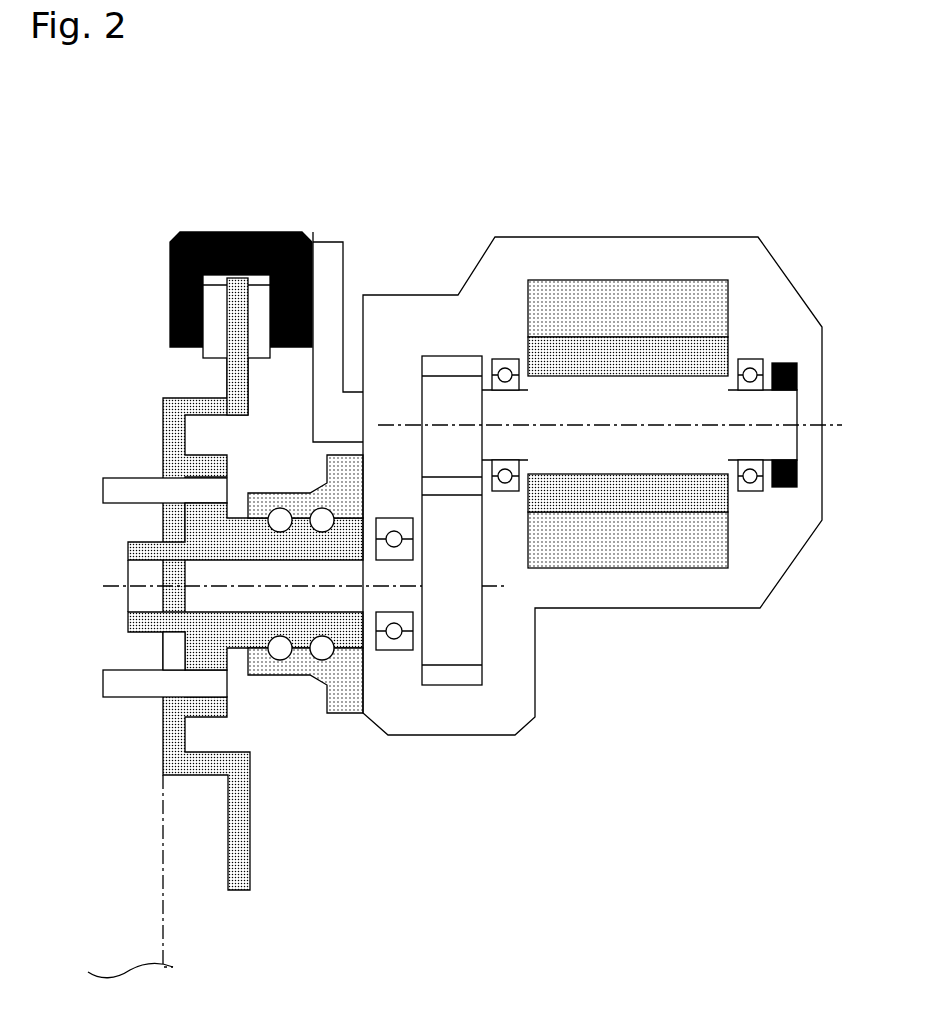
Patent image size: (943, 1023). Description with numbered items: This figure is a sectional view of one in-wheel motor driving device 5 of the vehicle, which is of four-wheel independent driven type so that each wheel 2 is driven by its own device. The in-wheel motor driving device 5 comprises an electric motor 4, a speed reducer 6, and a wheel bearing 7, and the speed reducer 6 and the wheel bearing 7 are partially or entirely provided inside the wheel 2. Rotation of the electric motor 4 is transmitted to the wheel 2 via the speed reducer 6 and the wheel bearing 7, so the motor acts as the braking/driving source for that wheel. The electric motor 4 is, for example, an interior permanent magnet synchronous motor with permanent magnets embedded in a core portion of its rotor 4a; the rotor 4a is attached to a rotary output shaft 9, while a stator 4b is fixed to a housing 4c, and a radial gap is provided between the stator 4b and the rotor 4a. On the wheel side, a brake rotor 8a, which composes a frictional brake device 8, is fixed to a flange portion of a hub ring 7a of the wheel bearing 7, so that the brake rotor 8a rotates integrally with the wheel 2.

The wheel 2 is at (147, 900).
The electric motor 4 is at (604, 499).
The rotor 4a is at (710, 357).
The stator 4b is at (672, 308).
The housing 4c is at (770, 547).
The in-wheel motor driving device 5 is at (572, 525).
The speed reducer 6 is at (461, 690).
The wheel bearing 7 is at (288, 673).
The hub ring 7a is at (154, 546).
The frictional brake device 8 is at (200, 226).
The brake rotor 8a is at (178, 421).
The rotary output shaft 9 is at (570, 390).